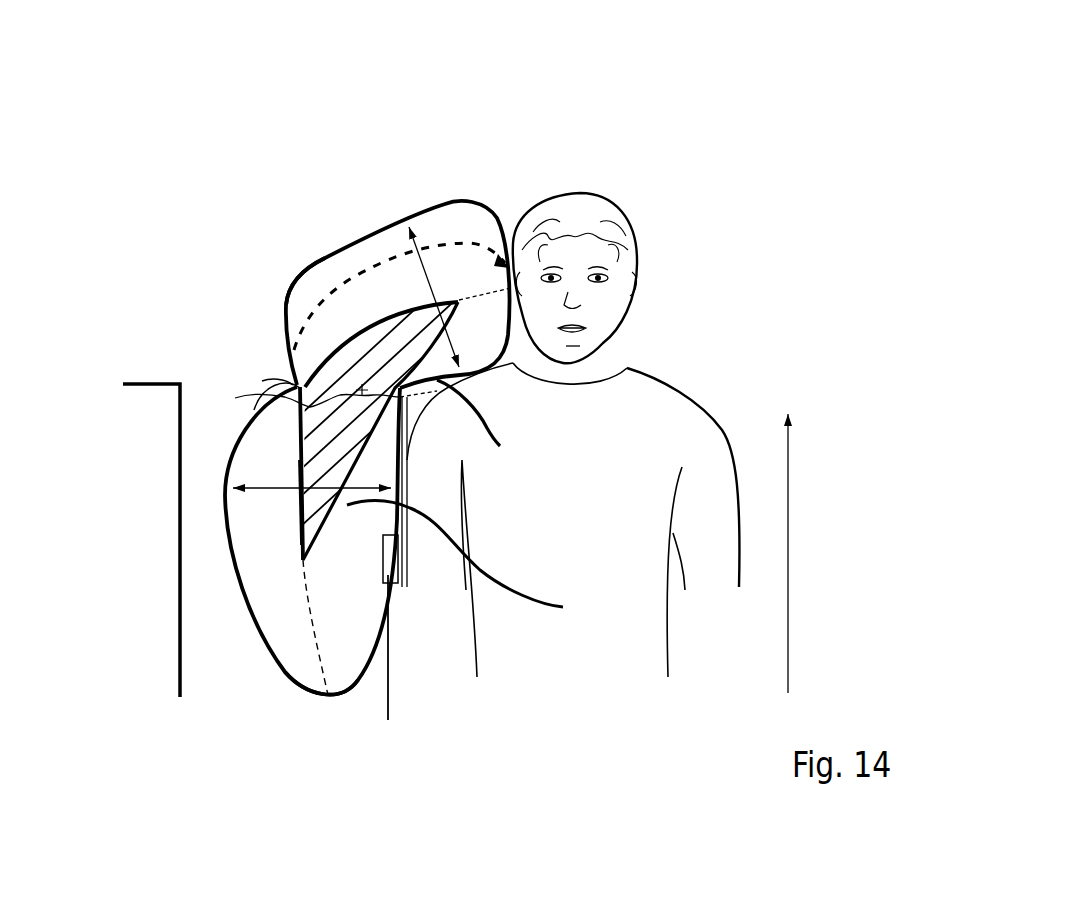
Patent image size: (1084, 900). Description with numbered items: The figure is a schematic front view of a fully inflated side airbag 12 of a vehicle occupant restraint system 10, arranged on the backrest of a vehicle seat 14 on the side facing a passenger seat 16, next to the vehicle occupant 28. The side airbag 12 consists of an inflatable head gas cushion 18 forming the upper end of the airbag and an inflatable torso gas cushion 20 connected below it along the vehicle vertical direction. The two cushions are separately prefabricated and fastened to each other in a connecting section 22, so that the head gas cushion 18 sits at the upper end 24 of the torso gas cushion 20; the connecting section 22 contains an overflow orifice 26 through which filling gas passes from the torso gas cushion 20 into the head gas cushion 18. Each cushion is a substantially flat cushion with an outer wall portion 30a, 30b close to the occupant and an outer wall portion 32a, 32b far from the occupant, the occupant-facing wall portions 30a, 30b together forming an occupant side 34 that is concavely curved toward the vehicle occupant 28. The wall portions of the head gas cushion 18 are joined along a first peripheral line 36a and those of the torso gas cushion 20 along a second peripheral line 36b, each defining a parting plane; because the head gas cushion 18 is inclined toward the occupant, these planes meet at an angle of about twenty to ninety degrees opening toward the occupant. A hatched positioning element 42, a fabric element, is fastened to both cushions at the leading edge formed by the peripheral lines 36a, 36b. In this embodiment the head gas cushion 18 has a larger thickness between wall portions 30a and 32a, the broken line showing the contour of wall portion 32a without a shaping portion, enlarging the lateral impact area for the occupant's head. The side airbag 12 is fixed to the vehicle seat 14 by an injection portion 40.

The vehicle occupant restraint system 10 is at (190, 115).
The side airbag 12 is at (323, 222).
The vehicle seat 14 is at (407, 678).
The passenger seat 16 is at (166, 437).
The head gas cushion 18 is at (303, 305).
The torso gas cushion 20 is at (263, 607).
The connecting section 22 is at (288, 371).
The upper end of the torso gas cushion 24 is at (260, 381).
The overflow orifice 26 is at (316, 396).
The vehicle occupant 28 is at (665, 405).
The outer wall portion of the head gas cushion close to the vehicle occupant 30a is at (492, 422).
The outer wall portion of the torso gas cushion close to the vehicle occupant 30b is at (368, 678).
The outer wall portion of the head gas cushion far from the vehicle occupant 32a is at (383, 260).
The outer wall portion of the torso gas cushion far from the vehicle occupant 32b is at (270, 657).
The occupant side 34 is at (426, 451).
The first peripheral line 36a is at (460, 302).
The second peripheral line 36b is at (173, 504).
The injection portion 40 is at (398, 583).
The positioning element 42 is at (477, 561).